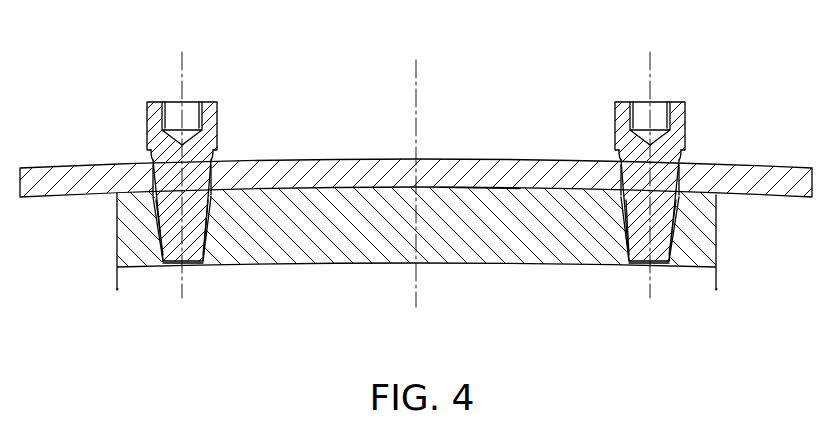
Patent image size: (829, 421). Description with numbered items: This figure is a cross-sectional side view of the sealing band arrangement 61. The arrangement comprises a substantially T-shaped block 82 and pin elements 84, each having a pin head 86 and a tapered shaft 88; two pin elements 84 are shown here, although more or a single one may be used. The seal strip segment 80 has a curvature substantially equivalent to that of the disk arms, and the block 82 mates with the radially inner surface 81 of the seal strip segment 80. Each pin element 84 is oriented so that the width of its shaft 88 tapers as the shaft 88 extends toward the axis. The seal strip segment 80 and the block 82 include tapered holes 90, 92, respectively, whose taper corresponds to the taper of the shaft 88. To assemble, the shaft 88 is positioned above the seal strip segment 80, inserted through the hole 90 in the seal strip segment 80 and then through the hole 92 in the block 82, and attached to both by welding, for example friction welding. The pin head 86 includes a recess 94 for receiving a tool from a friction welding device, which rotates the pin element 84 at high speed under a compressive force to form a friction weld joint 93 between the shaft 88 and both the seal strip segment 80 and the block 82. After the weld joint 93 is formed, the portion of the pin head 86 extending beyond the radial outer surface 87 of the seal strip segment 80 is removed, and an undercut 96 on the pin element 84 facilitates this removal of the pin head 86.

The sealing band arrangement 61 is at (692, 339).
The seal strip segment 80 is at (797, 198).
The radially inner surface 81 is at (487, 190).
The block 82 is at (333, 264).
The pin element 84 is at (414, 140).
The pin head 86 is at (147, 117).
The radial outer surface 87 is at (437, 158).
The tapered shaft 88 is at (153, 182).
The tapered hole 90 is at (160, 180).
The tapered hole 92 is at (157, 216).
The friction weld joint 93 is at (150, 245).
The recess 94 is at (189, 109).
The undercut 96 is at (216, 157).